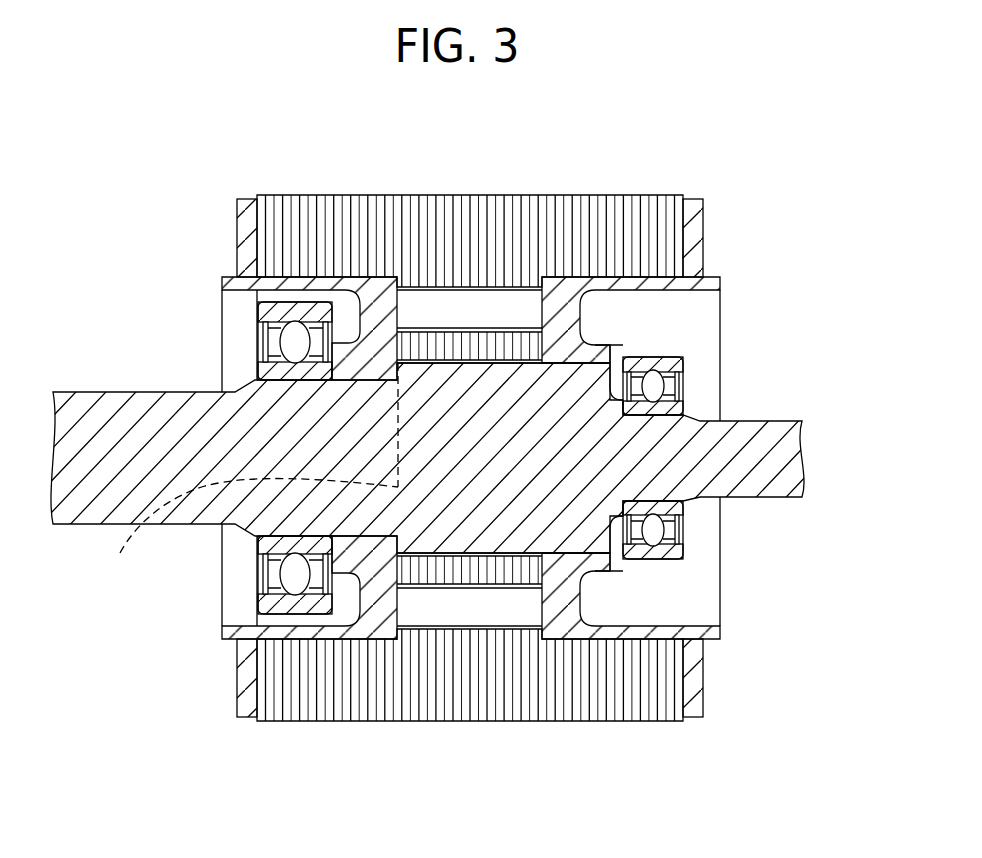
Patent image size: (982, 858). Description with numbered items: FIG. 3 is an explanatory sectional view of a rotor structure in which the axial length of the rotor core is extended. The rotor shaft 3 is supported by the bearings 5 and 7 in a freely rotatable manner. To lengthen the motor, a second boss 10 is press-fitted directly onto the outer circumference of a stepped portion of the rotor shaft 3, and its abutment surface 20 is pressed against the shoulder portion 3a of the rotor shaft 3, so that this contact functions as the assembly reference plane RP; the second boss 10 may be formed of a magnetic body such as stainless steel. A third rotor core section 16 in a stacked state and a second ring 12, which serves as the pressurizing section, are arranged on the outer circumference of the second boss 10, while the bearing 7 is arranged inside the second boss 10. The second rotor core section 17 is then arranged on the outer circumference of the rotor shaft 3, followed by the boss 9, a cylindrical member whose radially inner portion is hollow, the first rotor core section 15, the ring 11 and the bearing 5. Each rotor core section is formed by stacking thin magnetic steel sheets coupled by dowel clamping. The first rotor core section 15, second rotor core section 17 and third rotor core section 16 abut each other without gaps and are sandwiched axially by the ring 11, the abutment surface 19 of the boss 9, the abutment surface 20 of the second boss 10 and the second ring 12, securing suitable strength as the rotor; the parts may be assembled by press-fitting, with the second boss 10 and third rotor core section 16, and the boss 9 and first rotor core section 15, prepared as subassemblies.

The rotor shaft 3 is at (757, 483).
The shoulder portion 3a is at (397, 365).
The bearing 5 is at (685, 362).
The bearing 7 is at (257, 573).
The boss 9 is at (707, 328).
The second boss 10 is at (228, 333).
The ring 11 is at (700, 233).
The second ring 12 is at (243, 233).
The first rotor core section 15 is at (632, 230).
The third rotor core section 16 is at (300, 230).
The second rotor core section 17 is at (468, 230).
The abutment surface 19 is at (537, 310).
The abutment surface 20 is at (400, 307).
The assembly reference plane RP is at (250, 531).